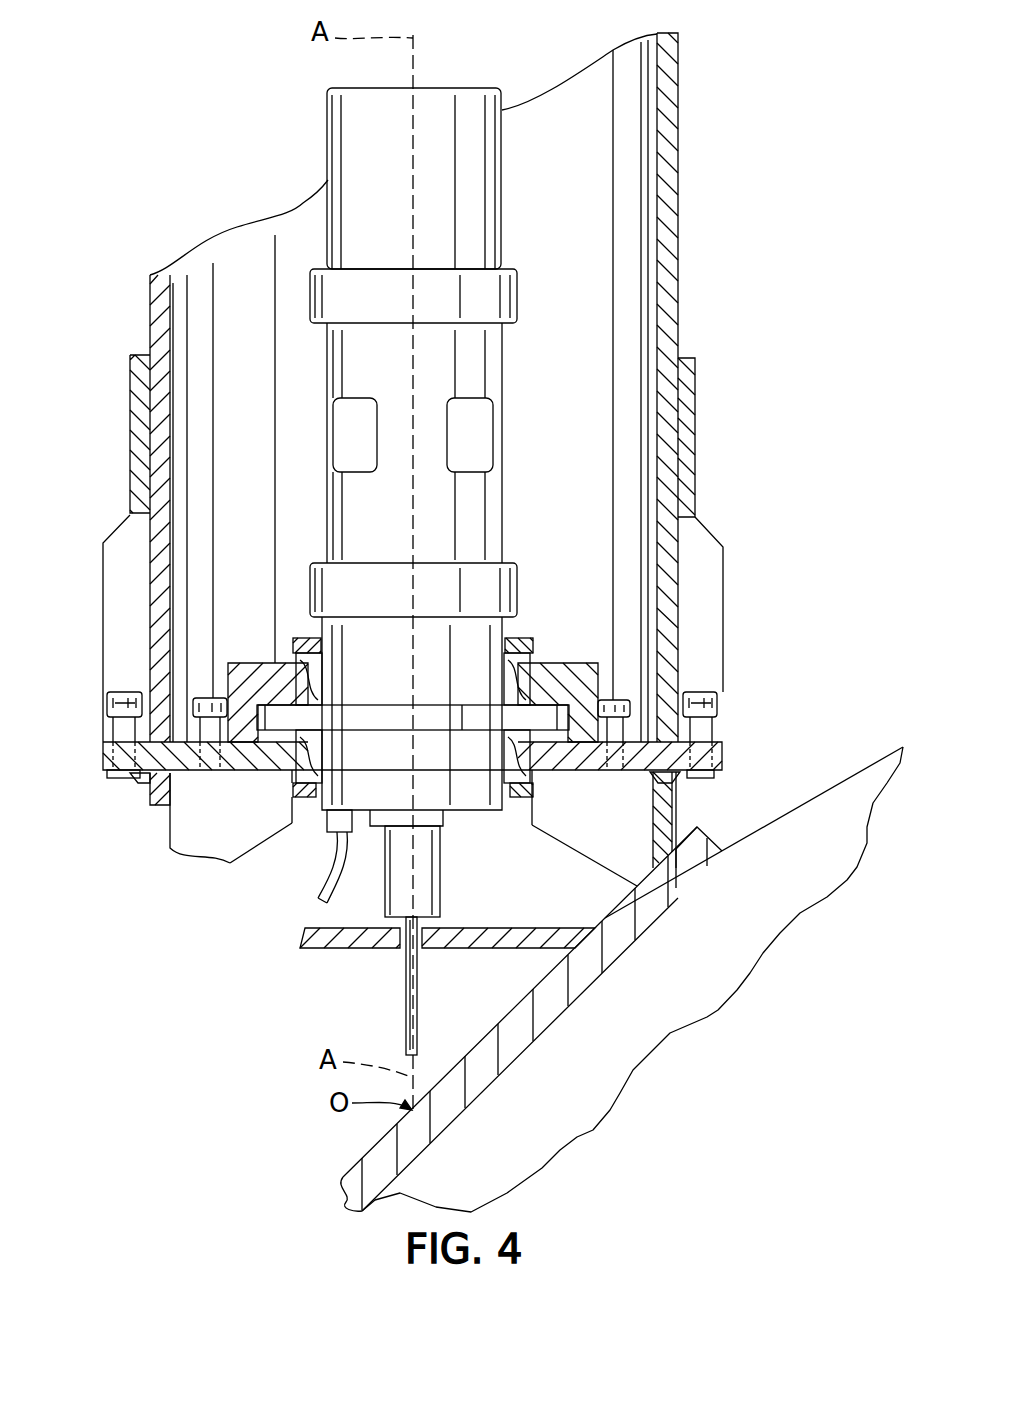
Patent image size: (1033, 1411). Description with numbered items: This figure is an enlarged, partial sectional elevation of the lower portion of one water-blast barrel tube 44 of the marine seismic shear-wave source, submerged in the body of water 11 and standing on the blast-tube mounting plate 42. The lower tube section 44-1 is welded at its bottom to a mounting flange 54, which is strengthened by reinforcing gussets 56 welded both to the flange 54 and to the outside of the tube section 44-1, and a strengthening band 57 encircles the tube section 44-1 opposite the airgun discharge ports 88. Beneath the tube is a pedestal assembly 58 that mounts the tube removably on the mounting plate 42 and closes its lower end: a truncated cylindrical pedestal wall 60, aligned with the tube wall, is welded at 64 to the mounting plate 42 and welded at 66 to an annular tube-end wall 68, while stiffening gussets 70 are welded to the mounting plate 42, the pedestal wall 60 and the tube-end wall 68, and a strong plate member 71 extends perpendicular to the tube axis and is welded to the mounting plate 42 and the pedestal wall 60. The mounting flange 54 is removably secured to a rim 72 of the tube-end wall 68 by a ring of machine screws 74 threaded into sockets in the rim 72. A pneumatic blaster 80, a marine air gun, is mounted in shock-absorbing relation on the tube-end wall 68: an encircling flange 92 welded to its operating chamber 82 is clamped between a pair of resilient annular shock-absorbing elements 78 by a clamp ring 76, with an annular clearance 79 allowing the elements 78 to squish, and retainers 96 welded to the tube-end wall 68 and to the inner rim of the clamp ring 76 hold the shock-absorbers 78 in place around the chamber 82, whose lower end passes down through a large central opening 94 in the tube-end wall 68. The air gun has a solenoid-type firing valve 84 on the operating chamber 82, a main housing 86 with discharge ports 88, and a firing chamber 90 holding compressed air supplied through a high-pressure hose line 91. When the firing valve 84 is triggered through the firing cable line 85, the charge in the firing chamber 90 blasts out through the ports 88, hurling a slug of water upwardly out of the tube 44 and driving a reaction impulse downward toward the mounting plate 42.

The body of water 11 is at (101, 276).
The blast-tube mounting plate 42 is at (470, 1078).
The water-blast barrel tube 44 is at (690, 176).
The lower tube section 44-1 is at (683, 255).
The mounting flange 54 is at (104, 750).
The reinforcing gusset 56 is at (120, 612).
The strengthening band 57 is at (688, 433).
The pedestal assembly 58 is at (690, 805).
The pedestal wall 60 is at (158, 793).
The weld 64 is at (673, 852).
The weld 66 is at (150, 778).
The annular tube-end wall 68 is at (257, 762).
The stiffening gusset 70 is at (226, 837).
The plate member 71 is at (343, 950).
The rim 72 is at (104, 776).
The machine screw 74 is at (108, 702).
The clamp ring 76 is at (580, 663).
The shock-absorbing element 78 is at (322, 683).
The annular clearance 79 is at (257, 718).
The pneumatic blaster 80 is at (548, 196).
The operating chamber 82 is at (393, 652).
The firing valve 84 is at (431, 872).
The firing cable line 85 is at (418, 1003).
The main housing 86 is at (403, 527).
The discharge port 88 is at (352, 435).
The firing chamber 90 is at (393, 214).
The high-pressure hose line 91 is at (320, 880).
The encircling flange 92 is at (357, 718).
The central opening 94 is at (318, 770).
The retainer 96 is at (528, 645).